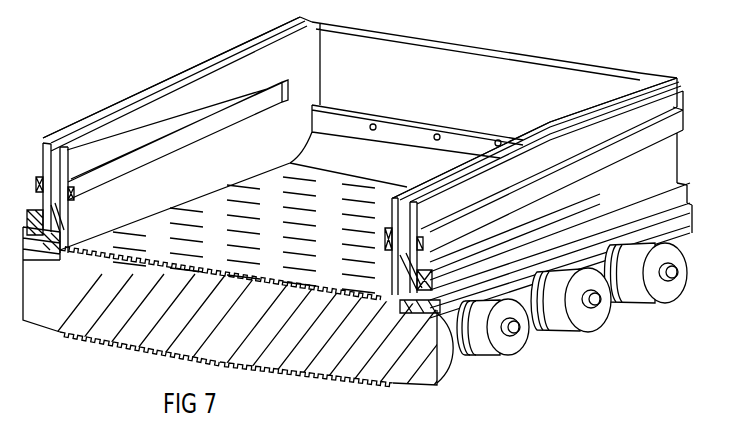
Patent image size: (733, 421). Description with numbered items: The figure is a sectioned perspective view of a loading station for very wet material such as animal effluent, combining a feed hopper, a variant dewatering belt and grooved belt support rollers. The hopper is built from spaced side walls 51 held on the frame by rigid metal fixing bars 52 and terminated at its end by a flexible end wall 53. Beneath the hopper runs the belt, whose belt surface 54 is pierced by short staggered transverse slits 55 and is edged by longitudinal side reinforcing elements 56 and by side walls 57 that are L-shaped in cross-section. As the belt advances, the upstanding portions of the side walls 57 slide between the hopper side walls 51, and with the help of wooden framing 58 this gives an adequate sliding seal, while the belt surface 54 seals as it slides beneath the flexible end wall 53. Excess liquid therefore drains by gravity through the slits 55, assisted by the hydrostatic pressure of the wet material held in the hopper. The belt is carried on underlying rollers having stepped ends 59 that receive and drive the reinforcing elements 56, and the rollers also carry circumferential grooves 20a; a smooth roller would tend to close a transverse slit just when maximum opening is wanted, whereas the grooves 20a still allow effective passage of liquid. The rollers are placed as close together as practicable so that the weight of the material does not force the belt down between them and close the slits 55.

The circumferential grooves 20a is at (137, 345).
The hopper side walls 51 is at (206, 67).
The rigid metal fixing bars 52 is at (37, 177).
The flexible end wall 53 is at (380, 165).
The belt surface 54 is at (302, 272).
The short staggered transverse slits 55 is at (183, 233).
The longitudinal side reinforcing elements 56 is at (43, 255).
The belt side walls 57 is at (43, 218).
The wooden framing 58 is at (72, 208).
The stepped roller ends 59 is at (34, 288).